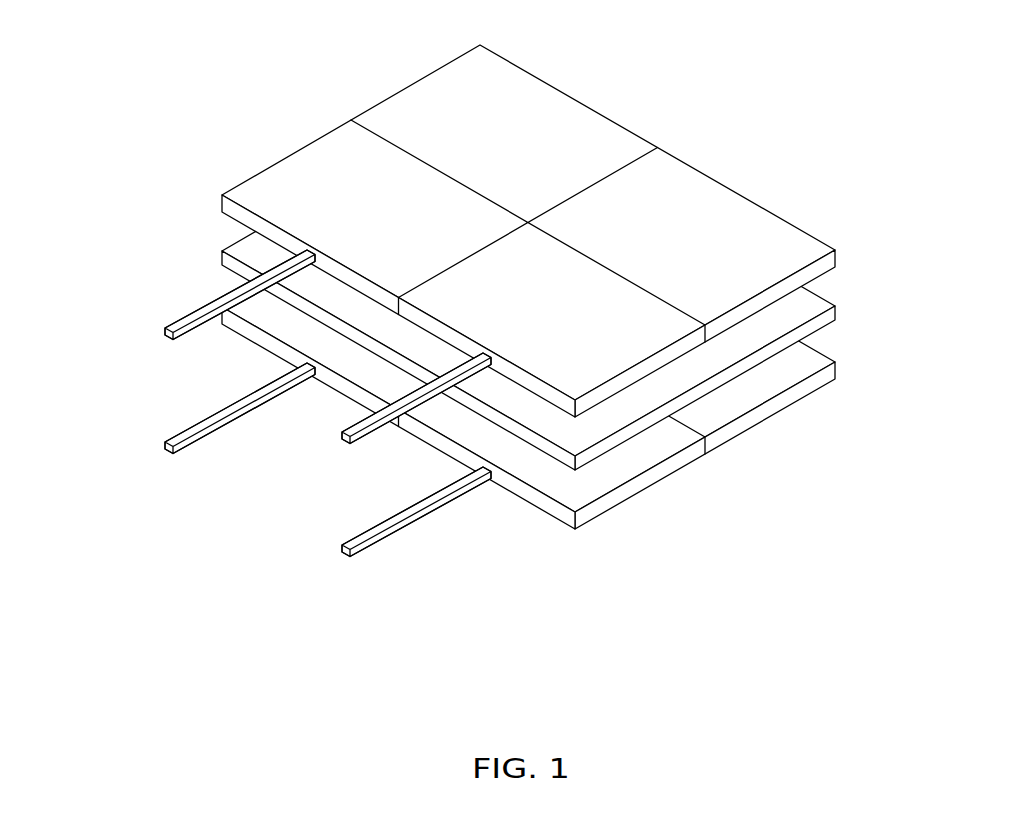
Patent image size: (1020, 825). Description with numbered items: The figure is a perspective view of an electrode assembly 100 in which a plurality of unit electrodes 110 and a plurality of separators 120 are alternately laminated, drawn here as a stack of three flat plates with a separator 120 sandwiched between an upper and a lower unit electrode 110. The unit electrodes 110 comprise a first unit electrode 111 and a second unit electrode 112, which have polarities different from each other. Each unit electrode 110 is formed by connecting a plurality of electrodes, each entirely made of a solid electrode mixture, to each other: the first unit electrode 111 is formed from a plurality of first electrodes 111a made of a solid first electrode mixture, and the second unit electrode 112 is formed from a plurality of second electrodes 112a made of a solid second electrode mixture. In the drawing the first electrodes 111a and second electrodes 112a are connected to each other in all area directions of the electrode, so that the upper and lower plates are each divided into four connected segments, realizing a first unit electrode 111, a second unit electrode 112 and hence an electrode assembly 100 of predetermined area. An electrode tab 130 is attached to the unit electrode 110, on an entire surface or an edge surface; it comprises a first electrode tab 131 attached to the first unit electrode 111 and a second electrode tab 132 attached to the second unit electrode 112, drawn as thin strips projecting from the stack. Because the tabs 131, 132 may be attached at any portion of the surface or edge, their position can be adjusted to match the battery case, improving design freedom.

The electrode assembly 100 is at (344, 58).
The unit electrode 110 is at (557, 296).
The first unit electrode 111 is at (562, 231).
The first electrode 111a is at (580, 125).
The second unit electrode 112 is at (562, 352).
The second electrode 112a is at (767, 392).
The separator 120 is at (245, 247).
The electrode tab 130 is at (267, 403).
The first electrode tab 131 is at (163, 330).
The second electrode tab 132 is at (208, 415).